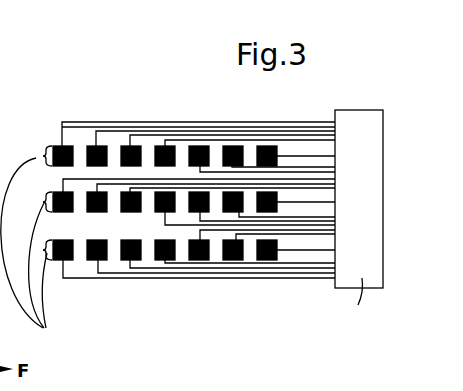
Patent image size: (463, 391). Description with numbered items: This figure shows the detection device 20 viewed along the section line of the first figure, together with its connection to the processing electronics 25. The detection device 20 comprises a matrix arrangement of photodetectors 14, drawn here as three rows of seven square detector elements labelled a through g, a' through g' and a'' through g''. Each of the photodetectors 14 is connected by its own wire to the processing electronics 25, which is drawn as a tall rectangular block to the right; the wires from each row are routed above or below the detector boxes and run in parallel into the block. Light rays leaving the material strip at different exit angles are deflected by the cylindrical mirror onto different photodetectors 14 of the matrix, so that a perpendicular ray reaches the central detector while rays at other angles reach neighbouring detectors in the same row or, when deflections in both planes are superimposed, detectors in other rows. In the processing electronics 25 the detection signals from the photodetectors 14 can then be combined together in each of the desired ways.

The photodetectors 14 is at (208, 146).
The detection device 20 is at (156, 108).
The processing electronics 25 is at (367, 205).